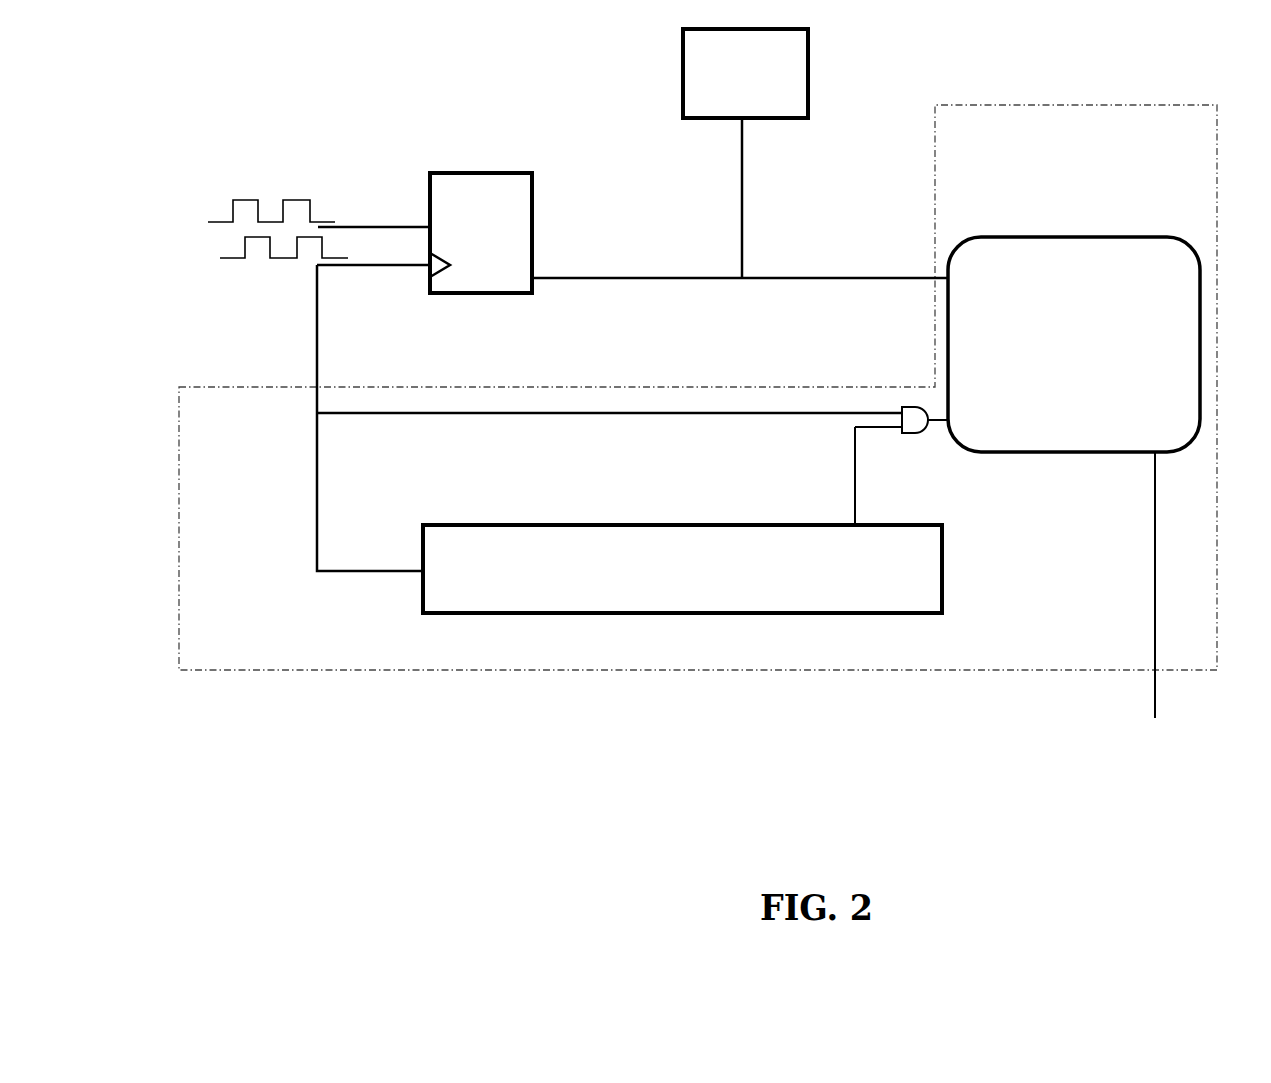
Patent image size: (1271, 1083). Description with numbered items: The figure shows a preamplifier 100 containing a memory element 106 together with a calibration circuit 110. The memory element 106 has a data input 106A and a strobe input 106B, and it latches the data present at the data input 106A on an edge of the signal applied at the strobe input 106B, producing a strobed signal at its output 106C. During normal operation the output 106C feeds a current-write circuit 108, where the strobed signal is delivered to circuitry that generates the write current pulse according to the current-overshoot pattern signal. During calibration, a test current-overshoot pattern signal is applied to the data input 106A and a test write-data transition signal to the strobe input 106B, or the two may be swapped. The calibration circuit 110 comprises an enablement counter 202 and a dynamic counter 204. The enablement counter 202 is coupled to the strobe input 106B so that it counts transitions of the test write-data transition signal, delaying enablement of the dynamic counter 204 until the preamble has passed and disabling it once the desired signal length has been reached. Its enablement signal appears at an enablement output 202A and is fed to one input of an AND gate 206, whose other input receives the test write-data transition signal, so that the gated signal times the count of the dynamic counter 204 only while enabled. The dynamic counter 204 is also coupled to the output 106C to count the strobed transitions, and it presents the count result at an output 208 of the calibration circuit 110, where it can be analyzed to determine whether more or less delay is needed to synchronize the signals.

The preamplifier 100 is at (718, 419).
The memory element 106 is at (481, 233).
The data input 106A is at (343, 215).
The strobe input 106B is at (561, 404).
The output 106C is at (719, 278).
The current-write circuit 108 is at (745, 153).
The calibration circuit 110 is at (388, 671).
The enablement counter 202 is at (682, 569).
The enablement output 202A is at (860, 522).
The dynamic counter 204 is at (1074, 344).
The AND gate 206 is at (918, 436).
The output 208 is at (1160, 677).